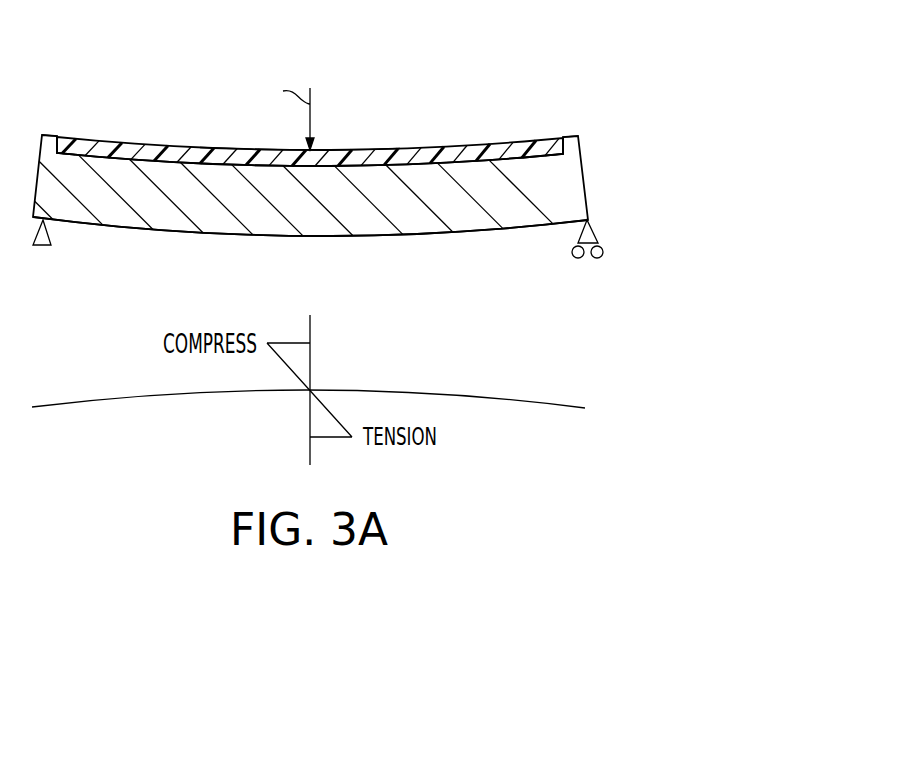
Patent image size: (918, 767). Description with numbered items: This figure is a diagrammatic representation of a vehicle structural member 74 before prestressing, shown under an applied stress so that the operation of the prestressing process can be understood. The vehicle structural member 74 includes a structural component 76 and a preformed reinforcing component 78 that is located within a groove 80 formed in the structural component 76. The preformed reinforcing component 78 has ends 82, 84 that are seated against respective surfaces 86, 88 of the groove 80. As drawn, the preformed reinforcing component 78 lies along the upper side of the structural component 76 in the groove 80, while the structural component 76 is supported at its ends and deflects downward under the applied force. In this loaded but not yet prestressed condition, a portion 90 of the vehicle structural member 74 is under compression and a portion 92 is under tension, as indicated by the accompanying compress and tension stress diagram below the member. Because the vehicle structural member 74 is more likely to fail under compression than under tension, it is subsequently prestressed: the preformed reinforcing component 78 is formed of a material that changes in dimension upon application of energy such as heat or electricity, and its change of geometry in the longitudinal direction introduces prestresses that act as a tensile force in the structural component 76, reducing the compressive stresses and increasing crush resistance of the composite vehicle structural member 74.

The vehicle structural member 74 is at (583, 177).
The structural component 76 is at (447, 222).
The preformed reinforcing component 78 is at (398, 150).
The groove 80 is at (233, 150).
The end of preformed reinforcing component 82 is at (99, 120).
The surface of groove 86 is at (63, 152).
The end of preformed reinforcing component 84 is at (521, 121).
The surface of groove 88 is at (560, 150).
The portion under compression 90 is at (345, 110).
The portion under tension 92 is at (140, 237).